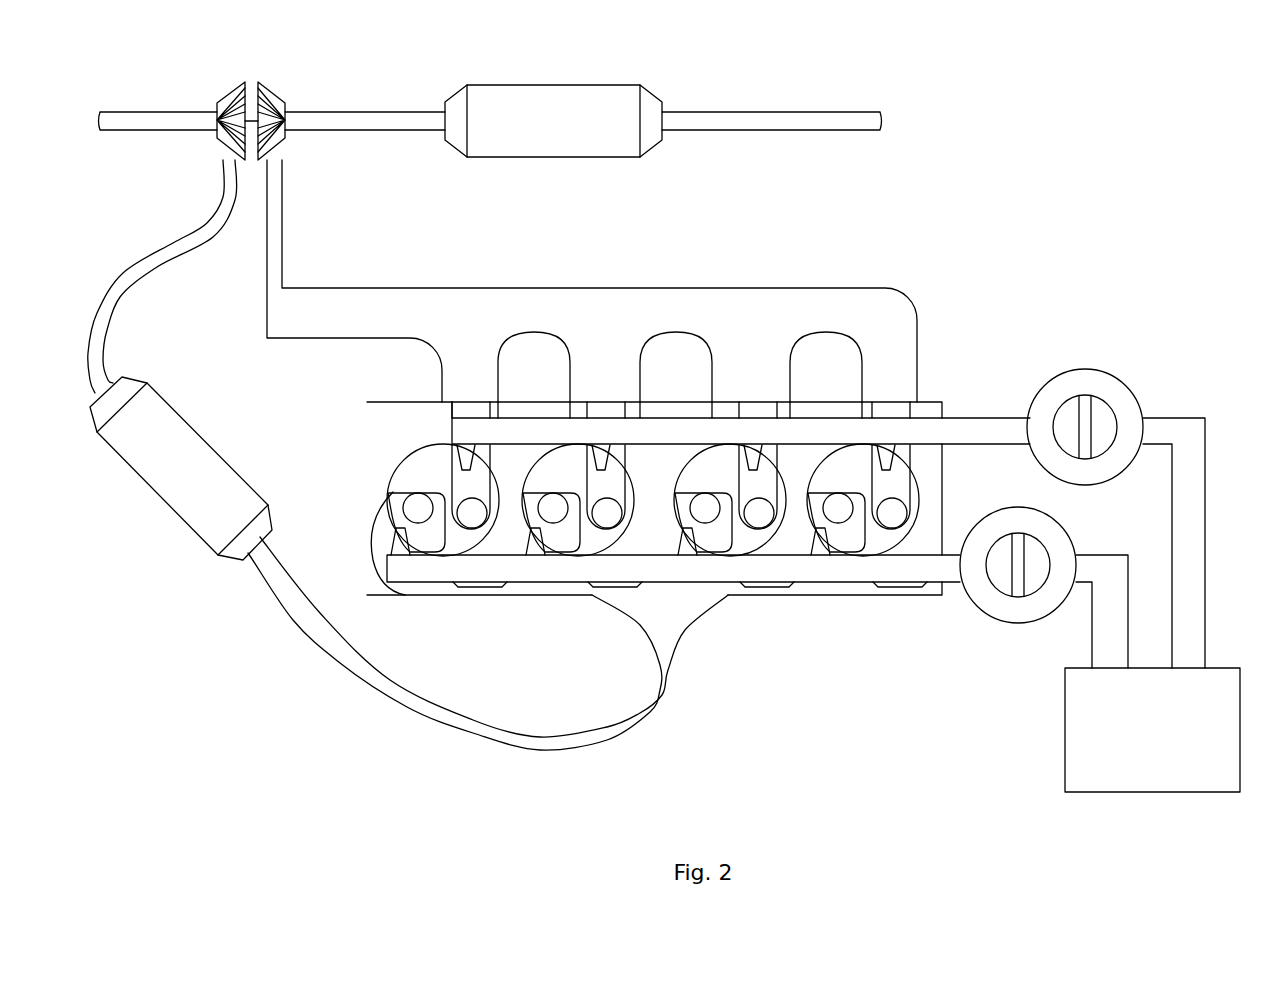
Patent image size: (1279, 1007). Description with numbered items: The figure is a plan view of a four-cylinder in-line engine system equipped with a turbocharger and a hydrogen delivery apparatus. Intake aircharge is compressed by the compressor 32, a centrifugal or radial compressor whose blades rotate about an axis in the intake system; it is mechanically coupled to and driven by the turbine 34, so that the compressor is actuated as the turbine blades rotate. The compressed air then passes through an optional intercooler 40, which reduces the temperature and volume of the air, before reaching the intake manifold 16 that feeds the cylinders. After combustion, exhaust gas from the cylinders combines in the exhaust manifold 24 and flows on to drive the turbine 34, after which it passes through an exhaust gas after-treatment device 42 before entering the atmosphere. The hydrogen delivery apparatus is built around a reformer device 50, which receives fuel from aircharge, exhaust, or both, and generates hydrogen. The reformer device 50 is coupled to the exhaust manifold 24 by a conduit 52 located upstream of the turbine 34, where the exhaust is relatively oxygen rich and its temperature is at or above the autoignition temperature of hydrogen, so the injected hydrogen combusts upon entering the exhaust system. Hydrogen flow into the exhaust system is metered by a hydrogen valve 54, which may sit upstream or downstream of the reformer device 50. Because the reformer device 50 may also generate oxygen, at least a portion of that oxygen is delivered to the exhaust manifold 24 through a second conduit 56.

The intake manifold 16 is at (823, 595).
The exhaust manifold 24 is at (593, 345).
The compressor 32 is at (227, 92).
The turbine 34 is at (270, 92).
The intercooler 40 is at (161, 479).
The exhaust gas after-treatment device 42 is at (540, 134).
The reformer device 50 is at (1140, 760).
The conduit 52 is at (1208, 527).
The hydrogen valve 54 is at (1100, 370).
The conduit 56 is at (1128, 582).